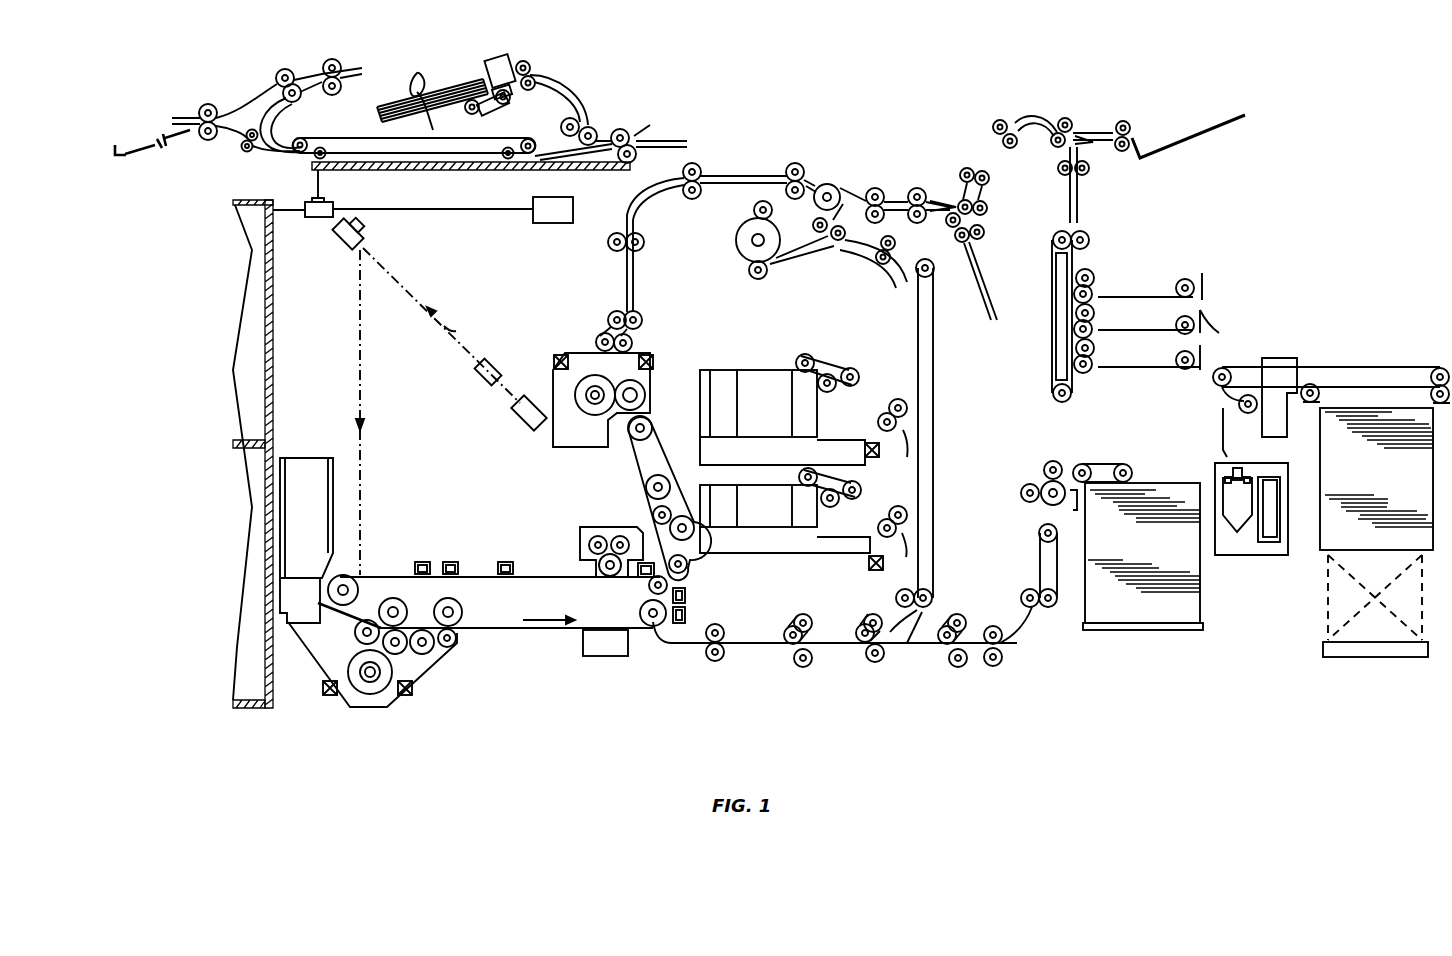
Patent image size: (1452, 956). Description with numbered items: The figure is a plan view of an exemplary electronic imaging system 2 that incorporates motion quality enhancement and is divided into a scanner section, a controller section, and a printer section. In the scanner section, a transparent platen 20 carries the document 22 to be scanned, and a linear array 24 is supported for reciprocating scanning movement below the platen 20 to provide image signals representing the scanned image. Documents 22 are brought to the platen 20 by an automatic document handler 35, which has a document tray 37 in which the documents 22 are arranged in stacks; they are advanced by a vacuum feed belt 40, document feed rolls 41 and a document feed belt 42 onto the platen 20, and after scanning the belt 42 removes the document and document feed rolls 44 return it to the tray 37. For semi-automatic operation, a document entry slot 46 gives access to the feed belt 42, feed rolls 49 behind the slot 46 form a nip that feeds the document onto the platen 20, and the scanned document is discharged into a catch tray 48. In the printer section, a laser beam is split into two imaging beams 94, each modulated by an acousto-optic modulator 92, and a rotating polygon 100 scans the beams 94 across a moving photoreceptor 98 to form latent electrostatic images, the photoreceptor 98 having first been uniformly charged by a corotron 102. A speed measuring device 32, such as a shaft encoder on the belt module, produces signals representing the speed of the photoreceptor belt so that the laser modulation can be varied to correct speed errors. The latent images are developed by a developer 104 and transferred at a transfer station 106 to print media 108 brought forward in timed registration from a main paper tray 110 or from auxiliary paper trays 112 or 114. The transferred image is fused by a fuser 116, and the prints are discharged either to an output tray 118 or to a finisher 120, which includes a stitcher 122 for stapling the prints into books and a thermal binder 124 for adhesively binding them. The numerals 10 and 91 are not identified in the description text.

The electronic imaging system 2 is at (808, 90).
The web infeed section 10 is at (235, 88).
The transparent platen 20 is at (466, 171).
The document 22 is at (417, 74).
The linear array 24 is at (311, 200).
The shaft encoder 32 is at (586, 656).
The automatic document handler 35 is at (440, 66).
The document tray 37 is at (438, 116).
The vacuum feed belt 40 is at (528, 94).
The document feed rolls 41 is at (534, 71).
The document feed belt 42 is at (472, 138).
The document feed rolls 44 is at (296, 96).
The document entry slot 46 is at (653, 133).
The catch tray 48 is at (176, 140).
The feed rolls 49 is at (620, 130).
The mirror 91 is at (523, 420).
The acousto-optic modulator 92 is at (490, 365).
The imaging beams 94 is at (447, 330).
The photoreceptor 98 is at (530, 577).
The rotating polygon 100 is at (353, 247).
The corotron 102 is at (505, 562).
The developer 104 is at (437, 663).
The transfer station 106 is at (657, 650).
The print media 108 is at (1200, 583).
The main paper tray 110 is at (1123, 628).
The auxiliary paper tray 112 is at (753, 557).
The auxiliary paper tray 114 is at (753, 373).
The fuser 116 is at (663, 380).
The output tray 118 is at (1218, 125).
The finisher 120 is at (1255, 297).
The stitcher 122 is at (1231, 327).
The thermal binder 124 is at (1353, 358).